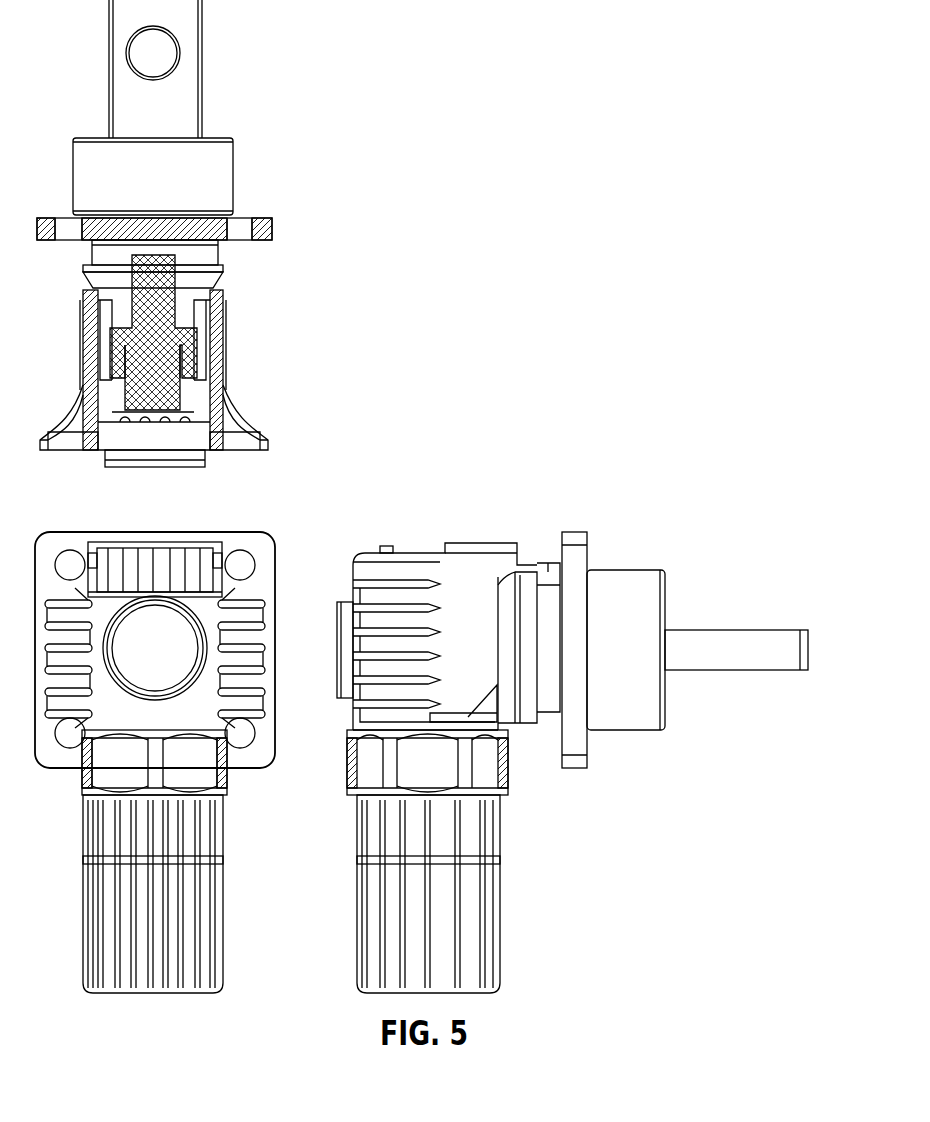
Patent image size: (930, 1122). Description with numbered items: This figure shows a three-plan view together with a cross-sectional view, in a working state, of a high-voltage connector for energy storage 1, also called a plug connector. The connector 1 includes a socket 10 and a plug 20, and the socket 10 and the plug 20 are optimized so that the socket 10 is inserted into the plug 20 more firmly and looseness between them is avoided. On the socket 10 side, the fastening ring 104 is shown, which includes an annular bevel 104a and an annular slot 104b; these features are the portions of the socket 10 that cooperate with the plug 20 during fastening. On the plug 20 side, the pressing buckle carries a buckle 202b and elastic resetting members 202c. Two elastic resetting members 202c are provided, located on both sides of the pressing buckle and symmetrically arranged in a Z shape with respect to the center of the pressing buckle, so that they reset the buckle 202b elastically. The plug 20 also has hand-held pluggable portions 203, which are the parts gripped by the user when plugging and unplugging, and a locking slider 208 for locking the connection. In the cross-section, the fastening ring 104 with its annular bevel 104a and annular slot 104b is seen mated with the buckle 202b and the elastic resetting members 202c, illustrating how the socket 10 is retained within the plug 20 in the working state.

The high-voltage connector for energy storage 1 is at (572, 554).
The socket 10 is at (735, 732).
The plug 20 is at (556, 860).
The fastening ring 104 is at (229, 268).
The annular bevel 104a is at (228, 272).
The annular slot 104b is at (220, 258).
The buckle 202b is at (228, 277).
The elastic resetting members 202c is at (228, 372).
The hand-held pluggable portions 203 is at (228, 425).
The locking slider 208 is at (383, 546).